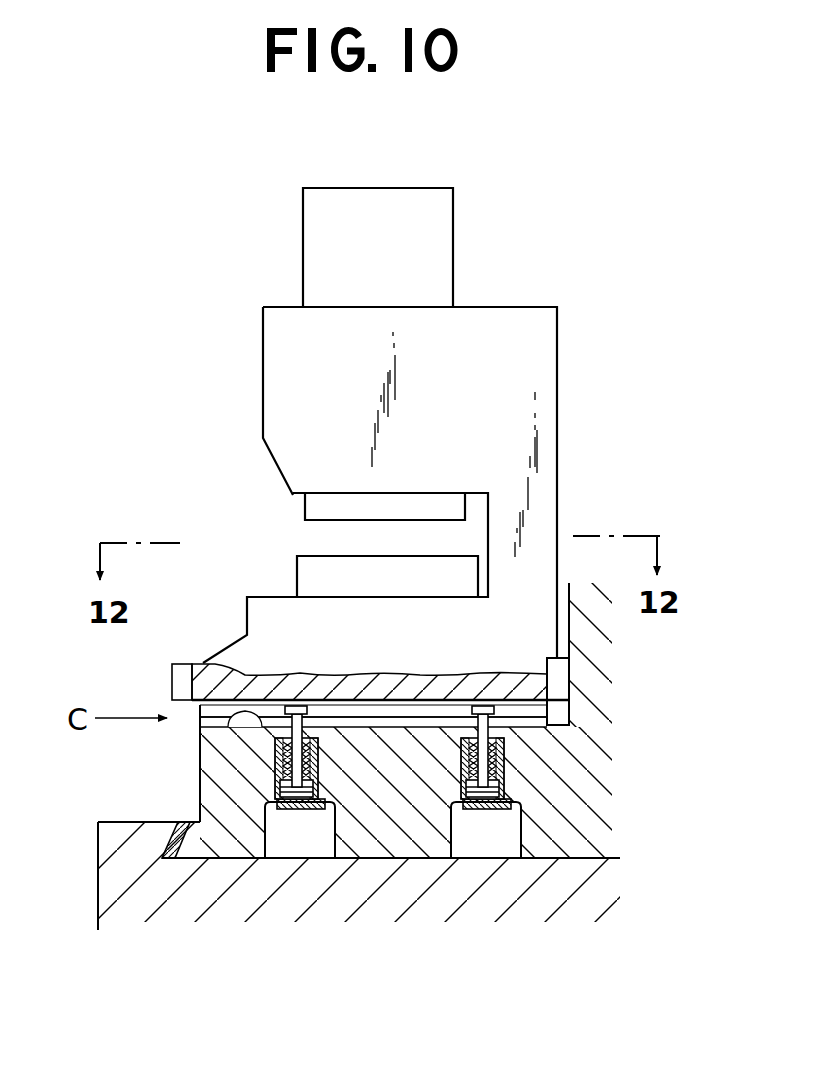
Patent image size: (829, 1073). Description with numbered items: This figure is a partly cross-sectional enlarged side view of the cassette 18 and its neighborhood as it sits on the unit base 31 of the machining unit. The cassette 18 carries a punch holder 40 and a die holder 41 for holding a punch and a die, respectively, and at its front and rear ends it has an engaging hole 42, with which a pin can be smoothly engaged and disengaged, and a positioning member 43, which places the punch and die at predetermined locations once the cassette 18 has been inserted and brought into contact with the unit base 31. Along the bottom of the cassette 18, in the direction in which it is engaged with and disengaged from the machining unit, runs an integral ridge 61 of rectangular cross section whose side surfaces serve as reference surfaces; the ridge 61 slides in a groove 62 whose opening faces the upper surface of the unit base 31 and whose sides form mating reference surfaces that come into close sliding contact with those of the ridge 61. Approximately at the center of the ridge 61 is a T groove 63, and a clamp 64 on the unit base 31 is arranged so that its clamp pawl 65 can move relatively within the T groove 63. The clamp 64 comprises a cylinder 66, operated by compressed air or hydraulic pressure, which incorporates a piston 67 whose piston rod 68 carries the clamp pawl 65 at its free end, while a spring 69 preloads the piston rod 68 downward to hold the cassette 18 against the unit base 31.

The cassette 18 is at (535, 346).
The punch holder 40 is at (318, 510).
The die holder 41 is at (310, 578).
The engaging hole 42 is at (180, 660).
The positioning member 43 is at (560, 673).
The unit base 31 is at (577, 773).
The ridge 61 is at (527, 727).
The groove 62 is at (230, 725).
The T groove 63 is at (202, 709).
The clamp 64 is at (505, 814).
The clamp pawl 65 is at (297, 705).
The cylinder 66 is at (463, 753).
The piston 67 is at (503, 778).
The piston rod 68 is at (494, 712).
The spring 69 is at (318, 752).